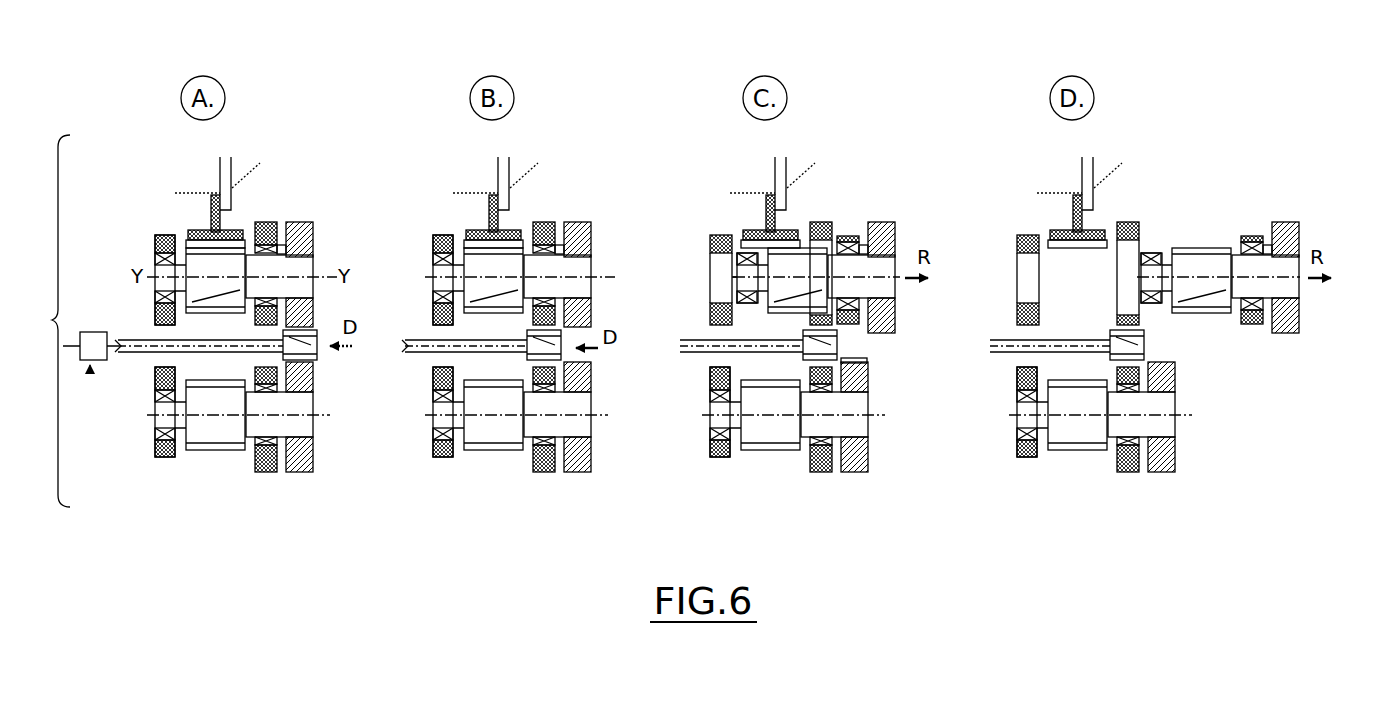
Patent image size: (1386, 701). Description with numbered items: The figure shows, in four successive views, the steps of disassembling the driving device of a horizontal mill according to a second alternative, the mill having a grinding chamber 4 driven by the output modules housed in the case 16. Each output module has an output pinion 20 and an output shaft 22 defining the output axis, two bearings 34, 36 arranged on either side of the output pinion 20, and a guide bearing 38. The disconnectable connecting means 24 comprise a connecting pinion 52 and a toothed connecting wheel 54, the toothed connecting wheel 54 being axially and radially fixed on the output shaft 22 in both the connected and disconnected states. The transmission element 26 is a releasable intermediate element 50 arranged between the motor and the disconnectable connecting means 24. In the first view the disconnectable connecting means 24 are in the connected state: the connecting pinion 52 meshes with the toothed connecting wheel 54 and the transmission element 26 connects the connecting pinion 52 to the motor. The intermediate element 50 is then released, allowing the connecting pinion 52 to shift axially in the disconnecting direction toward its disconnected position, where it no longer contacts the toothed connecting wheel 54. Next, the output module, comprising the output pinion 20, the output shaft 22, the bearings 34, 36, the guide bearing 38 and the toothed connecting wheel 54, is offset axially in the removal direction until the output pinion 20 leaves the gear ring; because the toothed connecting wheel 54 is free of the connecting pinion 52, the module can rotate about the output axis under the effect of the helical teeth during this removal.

In FIG. 6A, the grinding chamber 4 is at (231, 165).
In FIG. 6B, the grinding chamber 4 is at (510, 165).
In FIG. 6C, the grinding chamber 4 is at (788, 165).
In FIG. 6D, the grinding chamber 4 is at (1092, 165).
In FIG. 6C, the case 16 is at (818, 472).
In FIG. 6D, the case 16 is at (1125, 472).
In FIG. 6A, the output pinion 20 is at (228, 258).
In FIG. 6B, the output pinion 20 is at (506, 260).
In FIG. 6A, the output shaft 22 is at (305, 292).
In FIG. 6B, the output shaft 22 is at (585, 288).
In FIG. 6C, the output shaft 22 is at (885, 292).
In FIG. 6D, the output shaft 22 is at (1293, 293).
In FIG. 6A, the disconnectable connecting means 24 is at (330, 383).
In FIG. 6B, the disconnectable connecting means 24 is at (605, 360).
In FIG. 6C, the disconnectable connecting means 24 is at (895, 385).
In FIG. 6A, the transmission element 26 is at (90, 372).
In FIG. 6A, the bearing 34 is at (157, 260).
In FIG. 6B, the bearing 34 is at (433, 260).
In FIG. 6C, the bearing 34 is at (742, 255).
In FIG. 6D, the bearing 34 is at (1150, 254).
In FIG. 6A, the bearing 36 is at (275, 253).
In FIG. 6B, the bearing 36 is at (553, 253).
In FIG. 6C, the bearing 36 is at (855, 252).
In FIG. 6D, the bearing 36 is at (1262, 253).
In FIG. 6A, the guide bearing 38 is at (273, 243).
In FIG. 6B, the guide bearing 38 is at (553, 243).
In FIG. 6C, the guide bearing 38 is at (845, 238).
In FIG. 6D, the guide bearing 38 is at (1248, 238).
In FIG. 6A, the releasable intermediate element 50 is at (91, 330).
In FIG. 6A, the connecting pinion 52 is at (315, 352).
In FIG. 6B, the connecting pinion 52 is at (537, 352).
In FIG. 6C, the connecting pinion 52 is at (837, 352).
In FIG. 6D, the connecting pinion 52 is at (1144, 352).
In FIG. 6A, the toothed connecting wheel 54 is at (305, 235).
In FIG. 6C, the toothed connecting wheel 54 is at (880, 240).